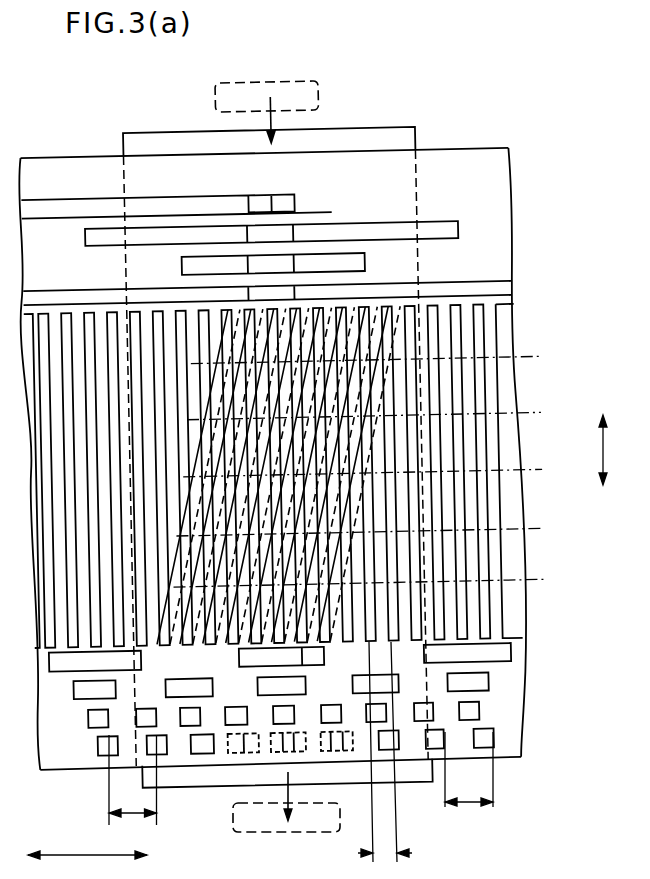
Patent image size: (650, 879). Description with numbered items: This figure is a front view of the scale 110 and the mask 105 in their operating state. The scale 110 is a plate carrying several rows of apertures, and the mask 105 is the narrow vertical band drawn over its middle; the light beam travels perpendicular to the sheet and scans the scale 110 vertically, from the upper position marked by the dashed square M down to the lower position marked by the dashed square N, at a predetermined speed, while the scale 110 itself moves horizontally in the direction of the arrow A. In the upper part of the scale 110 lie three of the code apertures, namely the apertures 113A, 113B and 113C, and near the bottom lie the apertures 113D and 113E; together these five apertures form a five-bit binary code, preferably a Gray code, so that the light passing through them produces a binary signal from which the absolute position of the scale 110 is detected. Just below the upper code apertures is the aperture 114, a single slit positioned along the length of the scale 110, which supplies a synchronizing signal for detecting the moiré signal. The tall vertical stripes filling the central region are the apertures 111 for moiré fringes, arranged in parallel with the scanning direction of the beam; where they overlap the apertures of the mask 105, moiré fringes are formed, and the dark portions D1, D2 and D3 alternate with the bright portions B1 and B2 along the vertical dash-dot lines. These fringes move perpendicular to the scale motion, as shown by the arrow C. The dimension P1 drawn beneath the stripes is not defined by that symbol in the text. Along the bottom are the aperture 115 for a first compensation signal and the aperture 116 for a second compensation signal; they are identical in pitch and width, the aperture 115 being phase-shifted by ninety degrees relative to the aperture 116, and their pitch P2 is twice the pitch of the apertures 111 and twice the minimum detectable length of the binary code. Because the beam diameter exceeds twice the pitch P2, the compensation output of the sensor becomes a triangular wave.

The upper-position beam section square M is at (322, 86).
The mask 105 is at (392, 124).
The scale 110 is at (487, 152).
The binary code aperture 113A is at (293, 210).
The binary code aperture 113B is at (458, 224).
The binary code aperture 113C is at (365, 262).
The synchronizing signal aperture 114 is at (507, 291).
The moiré fringe apertures 111 is at (505, 621).
The dark portion D1 is at (382, 366).
The bright portion B1 is at (379, 421).
The dark portion D2 is at (379, 479).
The bright portion B2 is at (375, 536).
The dark portion D3 is at (376, 589).
The moiré fringe movement arrow C is at (611, 450).
The binary code aperture 113D is at (505, 651).
The binary code aperture 113E is at (483, 681).
The first compensation signal aperture 115 is at (467, 717).
The second compensation signal aperture 116 is at (481, 745).
The pitch of compensation aperture P2 is at (301, 778).
The pitch P1 of stripe electrodes P1 is at (385, 851).
The scale moving direction arrow A is at (87, 843).
The lower-position beam section square N is at (245, 814).